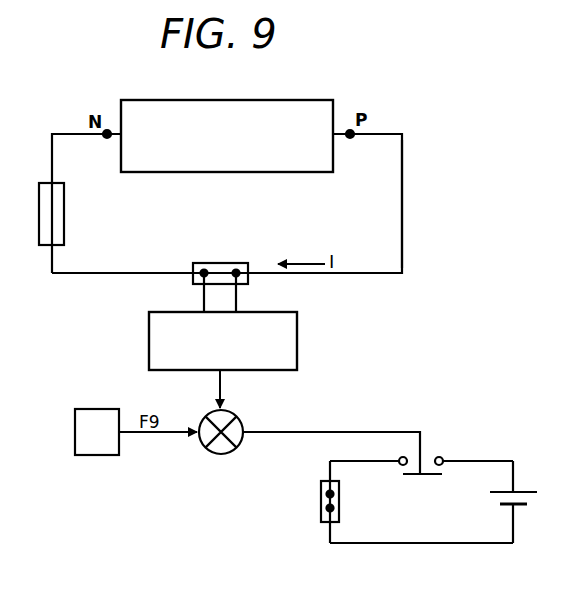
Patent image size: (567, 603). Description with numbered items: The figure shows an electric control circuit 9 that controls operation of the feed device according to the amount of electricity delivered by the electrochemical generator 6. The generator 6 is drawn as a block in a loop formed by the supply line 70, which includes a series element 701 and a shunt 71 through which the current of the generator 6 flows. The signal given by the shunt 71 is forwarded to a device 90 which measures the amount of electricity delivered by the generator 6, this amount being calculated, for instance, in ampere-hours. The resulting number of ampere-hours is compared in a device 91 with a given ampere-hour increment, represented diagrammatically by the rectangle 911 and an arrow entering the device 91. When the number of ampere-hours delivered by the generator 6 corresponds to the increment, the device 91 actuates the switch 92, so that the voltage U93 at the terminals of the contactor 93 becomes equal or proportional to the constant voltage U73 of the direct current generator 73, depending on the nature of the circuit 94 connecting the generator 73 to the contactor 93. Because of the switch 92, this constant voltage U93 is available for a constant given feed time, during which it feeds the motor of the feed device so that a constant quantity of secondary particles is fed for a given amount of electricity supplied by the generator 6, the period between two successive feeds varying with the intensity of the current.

The generator 6 is at (234, 151).
The supply line 70 is at (402, 200).
The series resistor 701 is at (64, 222).
The shunt 71 is at (214, 262).
The electric control circuit 9 is at (379, 347).
The device measuring the amount of electricity 90 is at (297, 353).
The comparing device 91 is at (239, 418).
The rectangle representing the ampere-hour increment 911 is at (110, 445).
The switch 92 is at (420, 456).
The contactor 93 is at (339, 513).
The voltage at the terminals of the contactor U93 is at (321, 498).
The direct current generator 73 is at (512, 492).
The constant voltage of the direct current generator U73 is at (519, 500).
The circuit connecting the generator to the contactor 94 is at (413, 543).